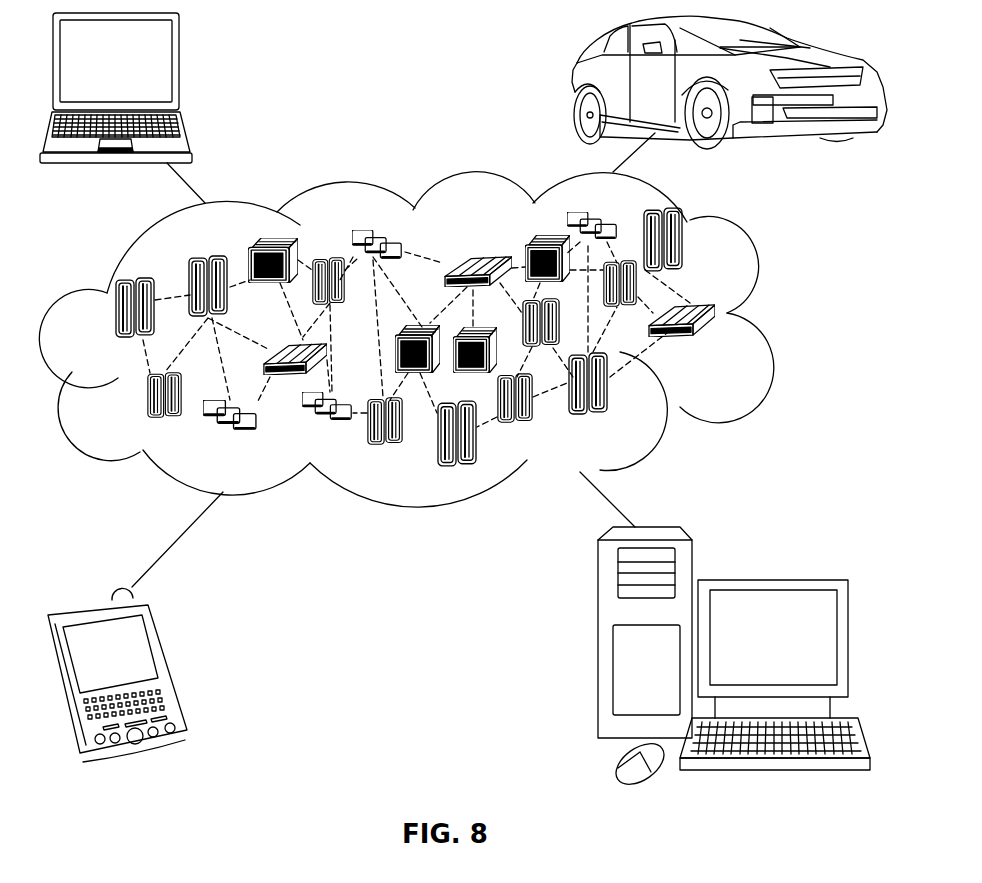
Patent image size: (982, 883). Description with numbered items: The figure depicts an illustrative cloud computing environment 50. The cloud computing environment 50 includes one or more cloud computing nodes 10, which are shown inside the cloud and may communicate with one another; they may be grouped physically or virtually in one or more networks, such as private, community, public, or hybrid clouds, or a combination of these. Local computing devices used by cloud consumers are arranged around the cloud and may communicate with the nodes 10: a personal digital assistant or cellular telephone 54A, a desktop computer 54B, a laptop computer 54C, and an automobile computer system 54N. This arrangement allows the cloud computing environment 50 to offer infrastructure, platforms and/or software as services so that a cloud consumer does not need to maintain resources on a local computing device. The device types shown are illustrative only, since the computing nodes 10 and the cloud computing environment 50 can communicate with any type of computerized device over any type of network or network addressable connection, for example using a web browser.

The cloud computing nodes 10 is at (720, 348).
The cloud computing environment 50 is at (767, 318).
The personal digital assistant or cellular telephone 54A is at (170, 660).
The desktop computer 54B is at (770, 578).
The laptop computer 54C is at (180, 68).
The automobile computer system 54N is at (572, 85).